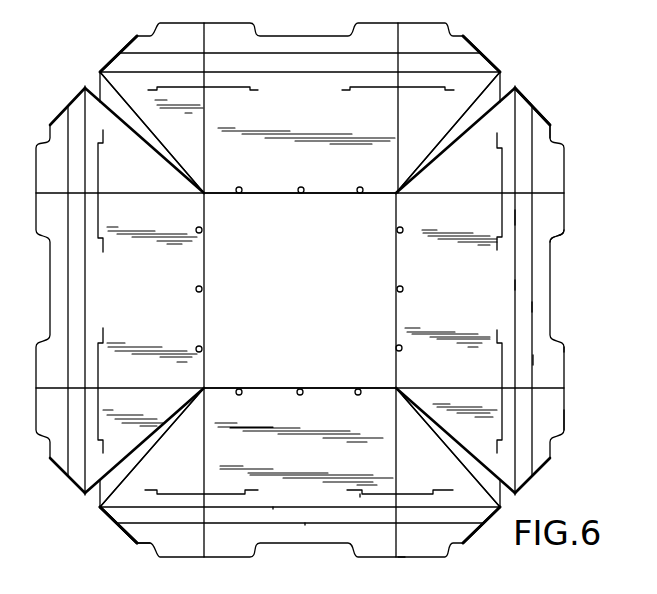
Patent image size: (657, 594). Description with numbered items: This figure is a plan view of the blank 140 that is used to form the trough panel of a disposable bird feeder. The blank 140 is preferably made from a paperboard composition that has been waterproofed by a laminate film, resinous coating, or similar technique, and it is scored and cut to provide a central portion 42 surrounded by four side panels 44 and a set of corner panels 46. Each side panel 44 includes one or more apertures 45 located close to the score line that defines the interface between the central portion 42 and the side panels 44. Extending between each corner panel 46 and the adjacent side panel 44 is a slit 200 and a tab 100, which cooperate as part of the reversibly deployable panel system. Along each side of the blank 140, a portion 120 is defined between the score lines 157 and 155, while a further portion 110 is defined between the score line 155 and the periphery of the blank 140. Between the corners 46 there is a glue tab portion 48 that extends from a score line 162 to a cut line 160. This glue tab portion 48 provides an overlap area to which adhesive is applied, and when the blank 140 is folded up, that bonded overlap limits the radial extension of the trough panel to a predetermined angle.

The central portion 42 is at (281, 300).
The side panel 44 is at (282, 120).
The aperture 45 is at (403, 228).
The corner panel 46 is at (167, 146).
The glue tab portion 48 is at (97, 82).
The tab 100 is at (557, 242).
The portion 110 is at (556, 119).
The portion 120 is at (542, 90).
The blank 140 is at (568, 420).
The score line 155 is at (533, 307).
The score line 157 is at (517, 285).
The cut line 160 is at (117, 110).
The score line 162 is at (138, 114).
The slit 200 is at (518, 220).